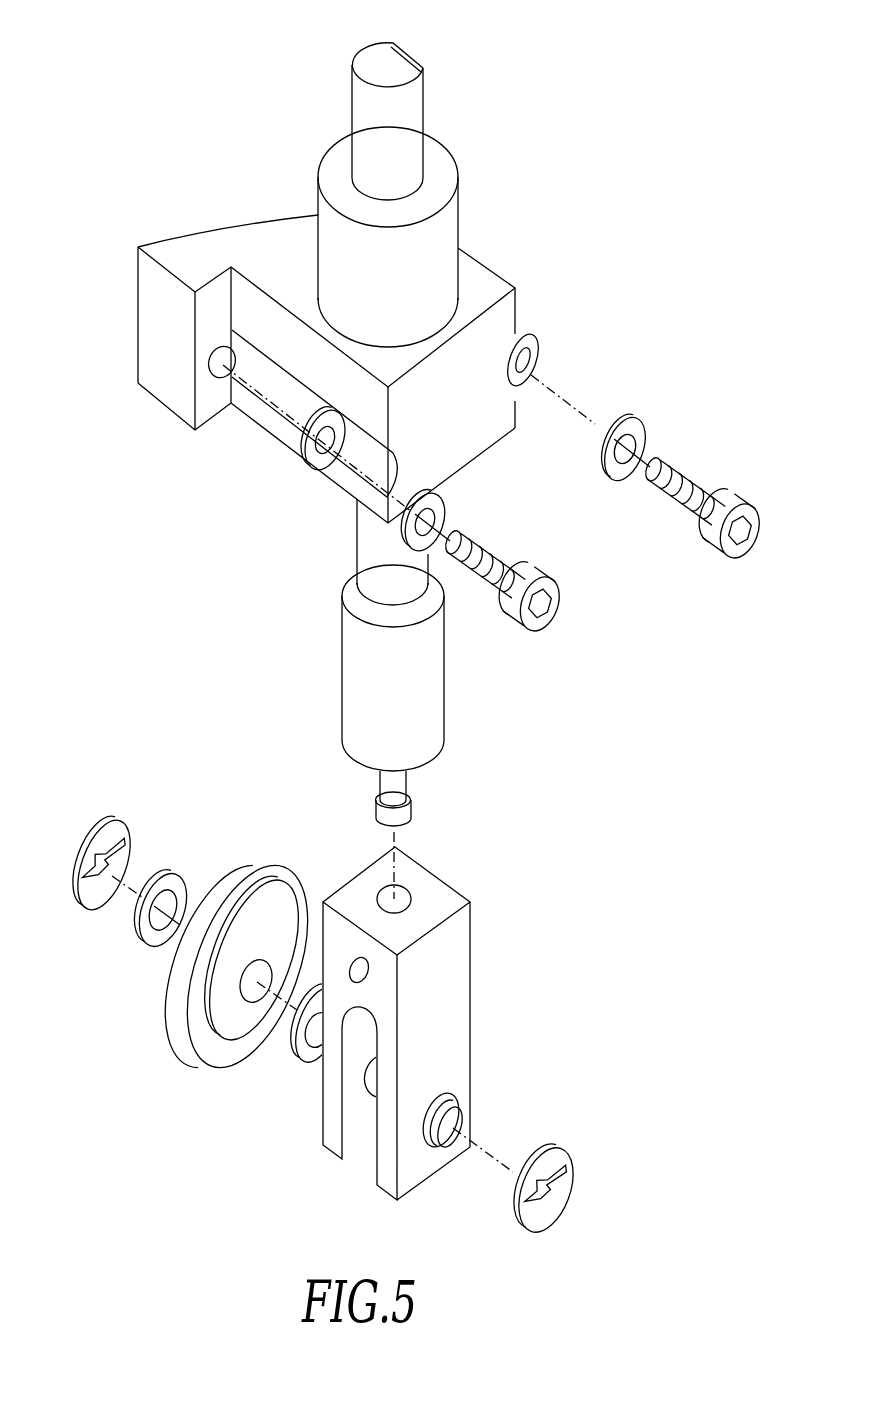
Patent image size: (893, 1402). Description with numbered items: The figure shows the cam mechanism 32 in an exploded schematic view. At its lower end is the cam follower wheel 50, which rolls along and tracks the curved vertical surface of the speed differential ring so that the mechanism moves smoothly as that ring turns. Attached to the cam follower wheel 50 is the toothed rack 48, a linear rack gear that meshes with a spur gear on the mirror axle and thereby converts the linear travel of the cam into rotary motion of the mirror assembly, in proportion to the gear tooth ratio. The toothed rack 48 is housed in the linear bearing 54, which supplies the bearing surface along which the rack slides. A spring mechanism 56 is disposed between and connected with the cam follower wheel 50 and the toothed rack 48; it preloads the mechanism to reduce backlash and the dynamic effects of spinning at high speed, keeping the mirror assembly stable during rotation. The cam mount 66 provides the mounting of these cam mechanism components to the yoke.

The cam mechanism 32 is at (168, 150).
The toothed rack 48 is at (410, 62).
The linear bearing 54 is at (458, 174).
The cam mount 66 is at (510, 310).
The spring mechanism 56 is at (427, 695).
The cam follower wheel 50 is at (191, 1050).